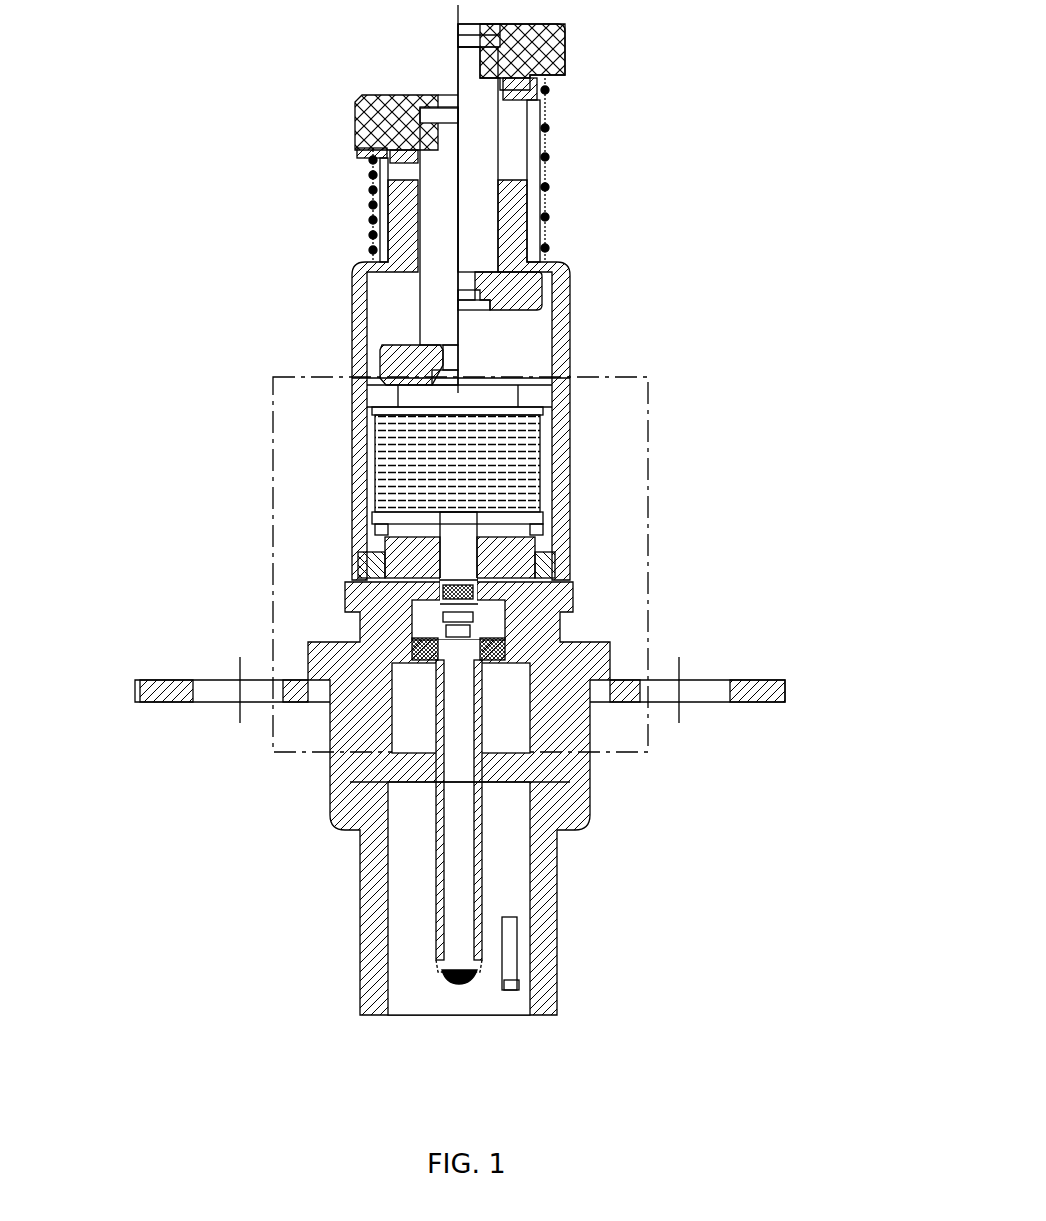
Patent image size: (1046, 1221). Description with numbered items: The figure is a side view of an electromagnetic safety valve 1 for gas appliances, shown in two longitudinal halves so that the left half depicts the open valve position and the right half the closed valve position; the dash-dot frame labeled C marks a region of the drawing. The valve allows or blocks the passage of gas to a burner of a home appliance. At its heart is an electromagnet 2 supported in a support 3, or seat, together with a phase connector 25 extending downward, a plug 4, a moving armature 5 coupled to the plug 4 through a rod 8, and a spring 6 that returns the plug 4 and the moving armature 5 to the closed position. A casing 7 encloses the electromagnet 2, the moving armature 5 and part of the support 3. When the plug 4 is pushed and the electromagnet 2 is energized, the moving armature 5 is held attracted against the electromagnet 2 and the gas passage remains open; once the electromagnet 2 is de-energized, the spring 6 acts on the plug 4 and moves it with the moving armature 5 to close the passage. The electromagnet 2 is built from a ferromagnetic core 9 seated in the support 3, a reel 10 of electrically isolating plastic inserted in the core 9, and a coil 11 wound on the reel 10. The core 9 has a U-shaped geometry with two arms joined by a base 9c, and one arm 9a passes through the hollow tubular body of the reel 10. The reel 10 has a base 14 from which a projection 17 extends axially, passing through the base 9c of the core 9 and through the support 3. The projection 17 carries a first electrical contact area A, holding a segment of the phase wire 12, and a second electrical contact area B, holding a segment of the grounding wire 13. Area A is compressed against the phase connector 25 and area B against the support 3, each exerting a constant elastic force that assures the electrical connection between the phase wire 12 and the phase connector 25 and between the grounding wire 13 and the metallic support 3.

The electromagnetic safety valve 1 is at (635, 312).
The electromagnet 2 is at (390, 457).
The support 3 is at (445, 652).
The plug 4 is at (355, 127).
The moving armature 5 is at (395, 345).
The spring 6 is at (375, 190).
The casing 7 is at (565, 262).
The rod 8 is at (548, 128).
The core 9 is at (380, 565).
The arm of the core 9a is at (418, 397).
The base of the core 9c is at (357, 557).
The reel 10 is at (542, 410).
The coil 11 is at (530, 459).
The phase wire 12 is at (380, 622).
The grounding wire 13 is at (560, 608).
The base of the reel 14 is at (545, 514).
The projection 17 is at (455, 660).
The phase connector 25 is at (482, 863).
The first electrical contact area A is at (428, 655).
The second electrical contact area B is at (560, 579).
The region C is at (634, 757).